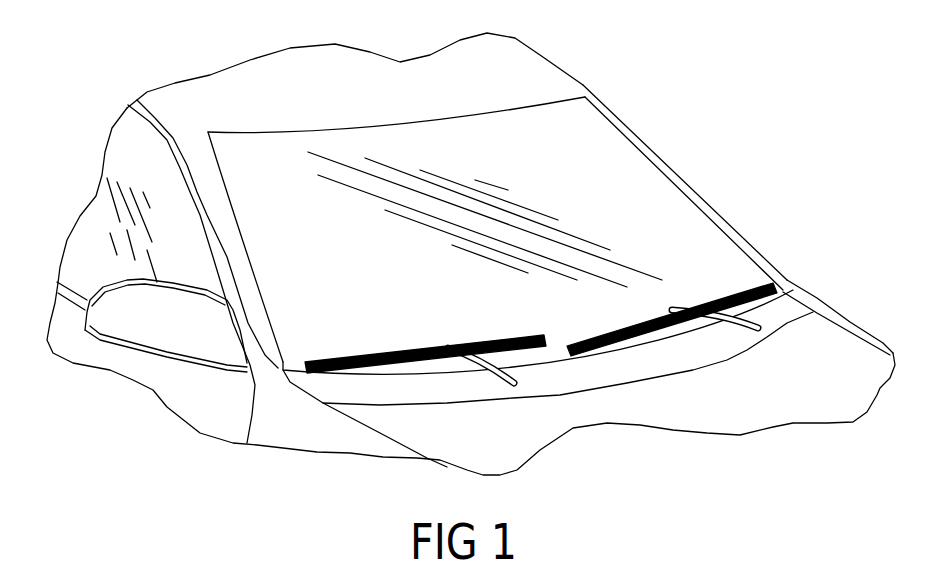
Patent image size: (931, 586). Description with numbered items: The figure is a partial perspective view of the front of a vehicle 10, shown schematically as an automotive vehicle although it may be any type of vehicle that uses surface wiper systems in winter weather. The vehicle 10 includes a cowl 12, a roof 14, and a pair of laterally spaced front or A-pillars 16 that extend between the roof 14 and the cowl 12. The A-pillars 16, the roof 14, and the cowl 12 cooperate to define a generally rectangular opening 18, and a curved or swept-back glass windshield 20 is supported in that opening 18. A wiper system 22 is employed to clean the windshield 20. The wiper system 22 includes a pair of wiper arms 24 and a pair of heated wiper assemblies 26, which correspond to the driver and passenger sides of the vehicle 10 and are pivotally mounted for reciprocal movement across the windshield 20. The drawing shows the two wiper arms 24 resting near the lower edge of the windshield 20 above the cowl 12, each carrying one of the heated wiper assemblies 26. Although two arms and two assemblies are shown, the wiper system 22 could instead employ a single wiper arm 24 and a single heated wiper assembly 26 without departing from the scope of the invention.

The vehicle 10 is at (92, 102).
The cowl 12 is at (793, 310).
The roof 14 is at (553, 78).
The A-pillars 16 is at (218, 217).
The opening 18 is at (652, 150).
The windshield 20 is at (564, 163).
The wiper system 22 is at (643, 407).
The wiper arms 24 is at (486, 386).
The heated wiper assemblies 26 is at (377, 340).